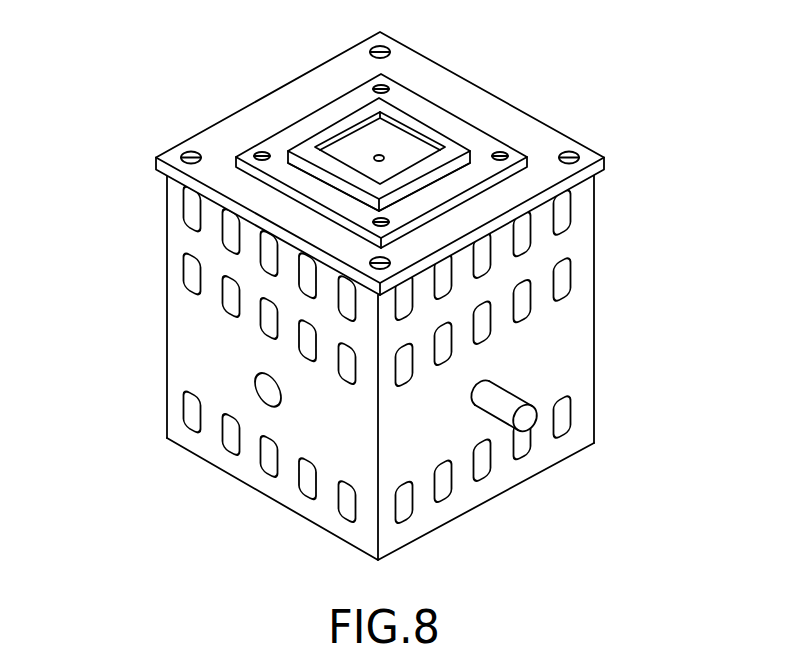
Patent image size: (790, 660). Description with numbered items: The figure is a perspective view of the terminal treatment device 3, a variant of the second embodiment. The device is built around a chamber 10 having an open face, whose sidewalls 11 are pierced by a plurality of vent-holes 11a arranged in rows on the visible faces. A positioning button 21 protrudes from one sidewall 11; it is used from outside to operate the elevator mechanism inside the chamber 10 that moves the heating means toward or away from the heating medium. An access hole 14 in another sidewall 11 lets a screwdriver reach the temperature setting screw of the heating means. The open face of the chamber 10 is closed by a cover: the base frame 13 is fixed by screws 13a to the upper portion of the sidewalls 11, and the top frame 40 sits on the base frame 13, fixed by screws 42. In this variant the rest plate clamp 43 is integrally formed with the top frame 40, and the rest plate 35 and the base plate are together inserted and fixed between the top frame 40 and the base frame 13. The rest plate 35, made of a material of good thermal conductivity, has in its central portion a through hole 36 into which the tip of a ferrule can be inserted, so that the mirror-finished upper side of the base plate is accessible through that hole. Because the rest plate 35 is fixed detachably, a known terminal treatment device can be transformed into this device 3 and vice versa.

The terminal treatment device 3 is at (382, 154).
The chamber 10 is at (366, 286).
The sidewalls 11 is at (371, 367).
The vent-holes 11a is at (195, 229).
The base frame 13 is at (378, 163).
The screws 13a is at (571, 153).
The access hole 14 is at (275, 396).
The positioning button 21 is at (507, 410).
The rest plate 35 is at (332, 98).
The through hole 36 is at (373, 155).
The top frame 40 is at (484, 126).
The screws 42 is at (394, 112).
The rest plate clamp 43 is at (442, 105).